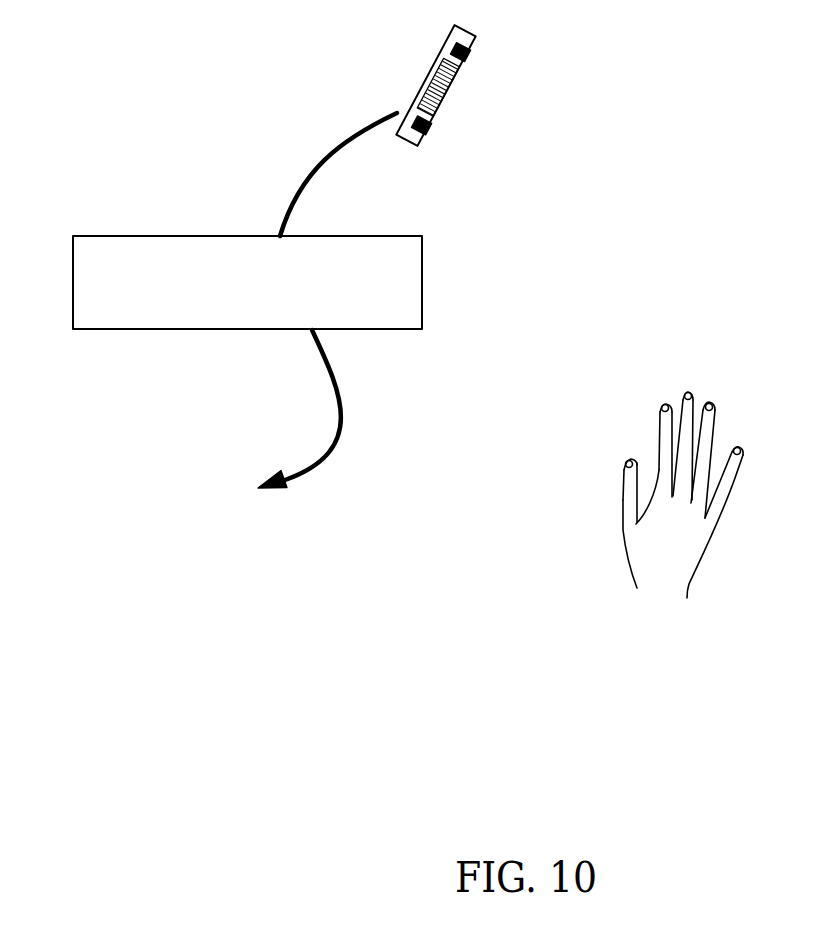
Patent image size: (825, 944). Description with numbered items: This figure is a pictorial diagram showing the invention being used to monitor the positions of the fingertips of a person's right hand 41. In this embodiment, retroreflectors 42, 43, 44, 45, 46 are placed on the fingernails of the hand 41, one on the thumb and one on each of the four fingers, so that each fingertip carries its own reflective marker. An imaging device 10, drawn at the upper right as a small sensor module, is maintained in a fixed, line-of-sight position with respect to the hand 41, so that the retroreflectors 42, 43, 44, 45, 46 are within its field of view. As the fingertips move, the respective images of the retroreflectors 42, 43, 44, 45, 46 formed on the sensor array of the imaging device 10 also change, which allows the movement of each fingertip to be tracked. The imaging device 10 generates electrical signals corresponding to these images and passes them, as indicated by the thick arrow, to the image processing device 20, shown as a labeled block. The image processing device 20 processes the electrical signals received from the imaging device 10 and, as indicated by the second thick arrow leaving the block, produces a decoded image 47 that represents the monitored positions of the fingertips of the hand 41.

The imaging device 10 is at (425, 78).
The image processing device 20 is at (342, 236).
The decoded image 47 is at (218, 443).
The right hand 41 is at (628, 563).
The retroreflector 42 is at (630, 459).
The retroreflector 43 is at (664, 407).
The retroreflector 44 is at (688, 395).
The retroreflector 45 is at (713, 403).
The retroreflector 46 is at (738, 447).